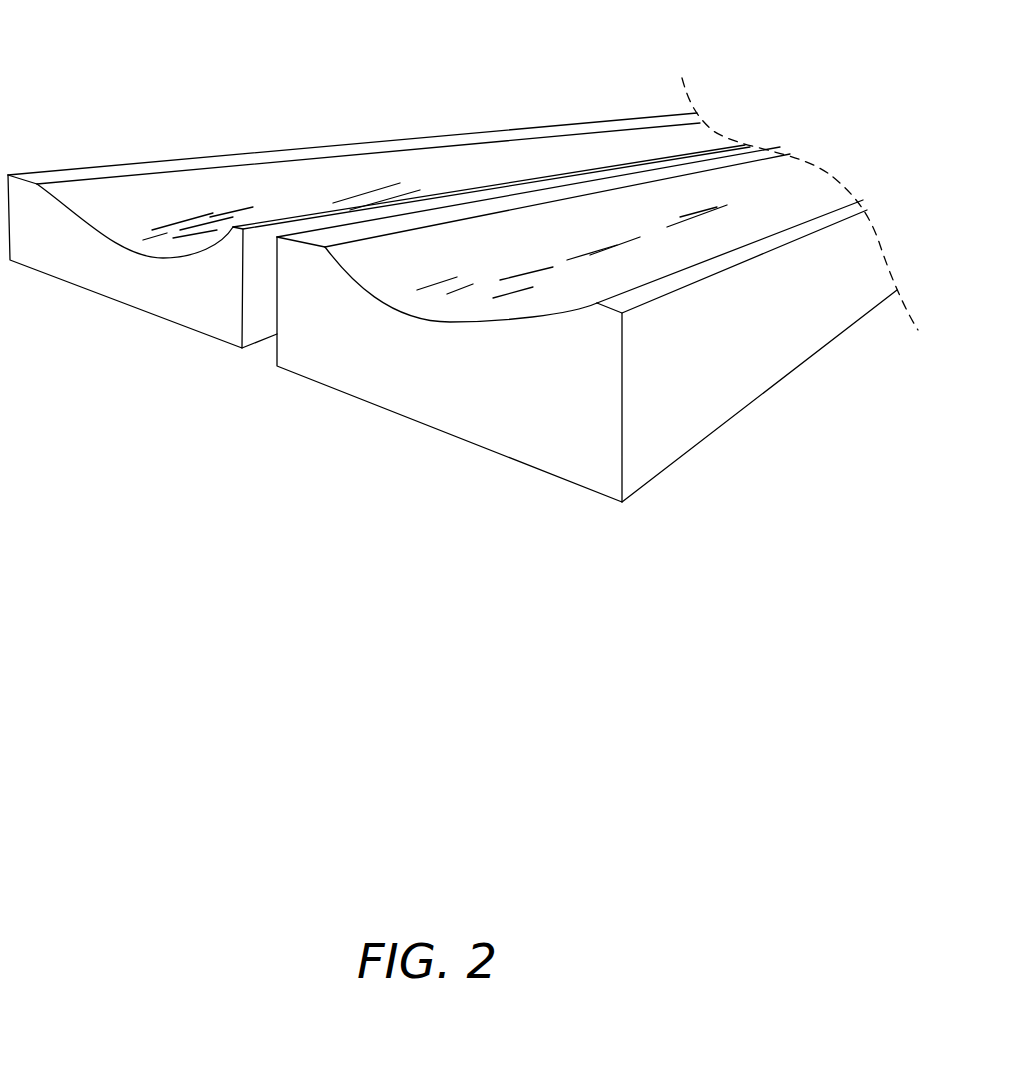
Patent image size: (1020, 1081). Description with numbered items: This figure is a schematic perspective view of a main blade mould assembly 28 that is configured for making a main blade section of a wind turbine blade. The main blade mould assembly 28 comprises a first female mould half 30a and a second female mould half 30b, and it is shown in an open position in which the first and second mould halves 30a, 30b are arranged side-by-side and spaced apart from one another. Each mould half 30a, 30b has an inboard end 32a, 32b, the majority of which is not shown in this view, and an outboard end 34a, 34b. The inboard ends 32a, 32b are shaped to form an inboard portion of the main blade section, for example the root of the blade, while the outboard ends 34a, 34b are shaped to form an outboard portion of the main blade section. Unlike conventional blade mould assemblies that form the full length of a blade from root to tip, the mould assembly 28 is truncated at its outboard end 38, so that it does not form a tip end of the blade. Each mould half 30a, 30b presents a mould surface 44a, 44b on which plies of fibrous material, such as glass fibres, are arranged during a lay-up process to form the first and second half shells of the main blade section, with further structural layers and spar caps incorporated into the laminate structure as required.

The main blade mould assembly 28 is at (463, 293).
The first female mould half 30a is at (587, 333).
The second female mould half 30b is at (379, 241).
The inboard end of first mould half 32a is at (881, 347).
The inboard end of second mould half 32b is at (652, 103).
The outboard end of first mould half 34a is at (668, 496).
The outboard end of second mould half 34b is at (38, 159).
The outboard end of mould assembly 38 is at (270, 392).
The mould surface of first mould half 44a is at (777, 207).
The mould surface of second mould half 44b is at (288, 190).